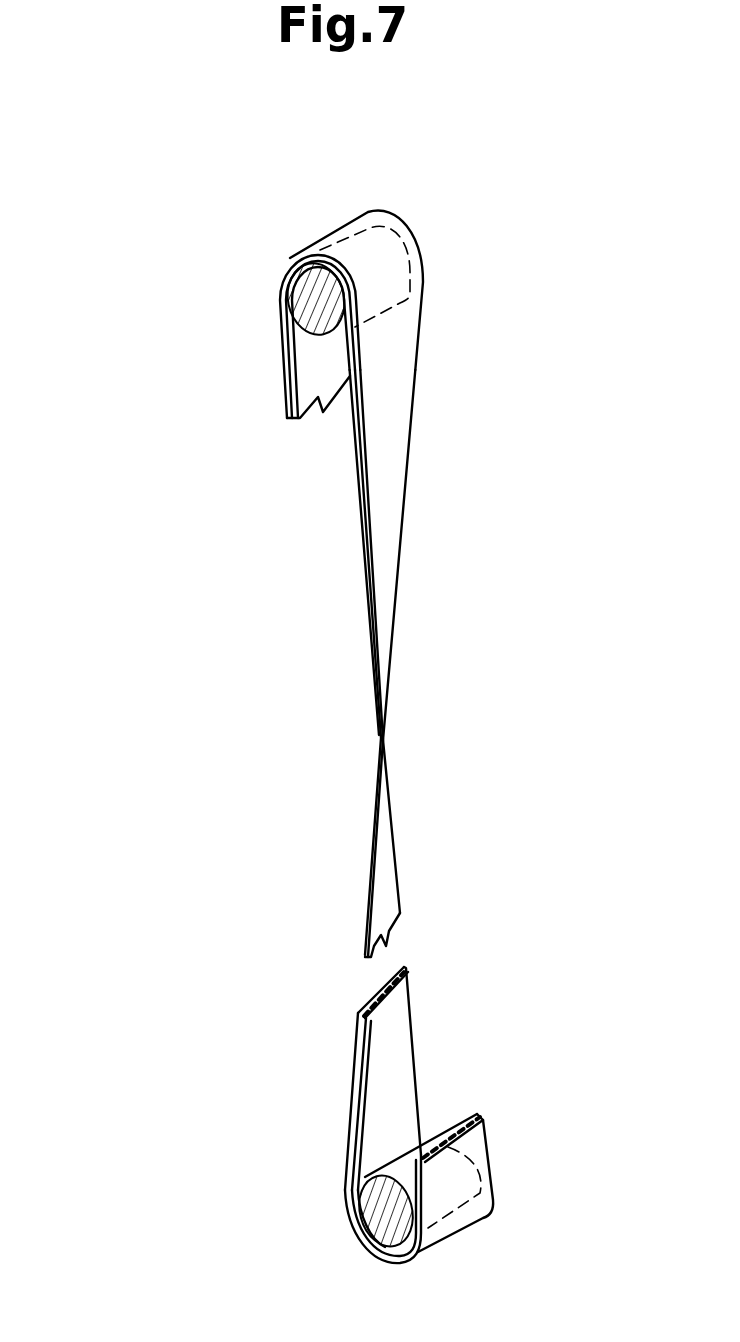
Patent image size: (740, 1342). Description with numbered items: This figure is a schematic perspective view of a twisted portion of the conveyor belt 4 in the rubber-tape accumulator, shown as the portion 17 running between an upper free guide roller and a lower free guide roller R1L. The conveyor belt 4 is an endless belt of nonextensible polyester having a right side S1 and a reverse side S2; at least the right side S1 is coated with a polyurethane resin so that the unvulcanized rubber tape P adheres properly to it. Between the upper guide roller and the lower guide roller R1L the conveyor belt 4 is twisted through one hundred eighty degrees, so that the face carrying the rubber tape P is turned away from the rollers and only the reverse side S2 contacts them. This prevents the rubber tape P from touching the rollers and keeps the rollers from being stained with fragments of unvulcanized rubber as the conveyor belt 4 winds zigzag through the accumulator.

The spring contact strip 17 is at (472, 757).
The conveyor belt 4 is at (398, 1018).
The reverse side S2 is at (405, 1043).
The rubber tape P is at (357, 1050).
The right side S1 is at (350, 1097).
The lower free guide rollers R1L is at (380, 1222).